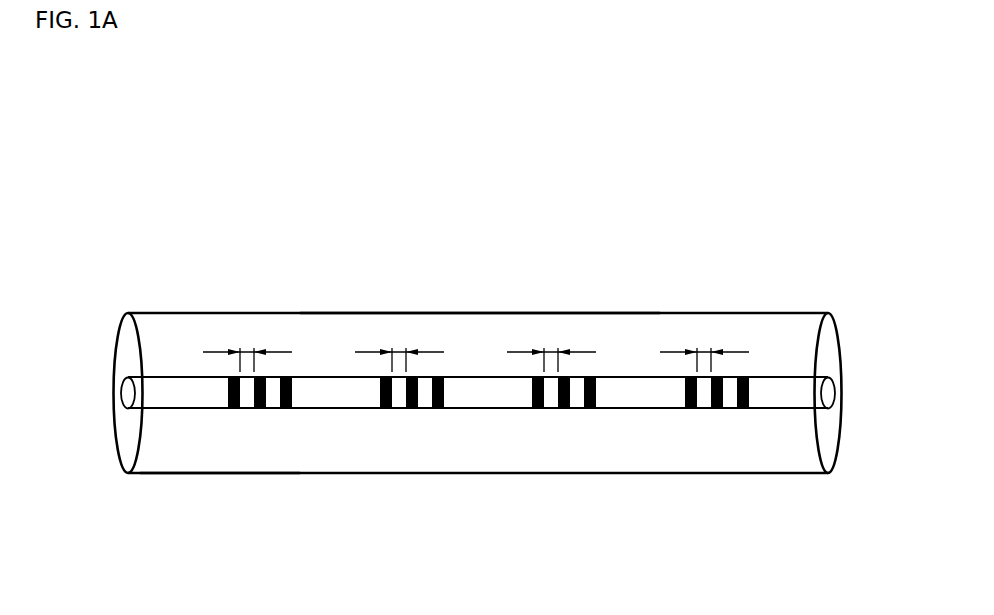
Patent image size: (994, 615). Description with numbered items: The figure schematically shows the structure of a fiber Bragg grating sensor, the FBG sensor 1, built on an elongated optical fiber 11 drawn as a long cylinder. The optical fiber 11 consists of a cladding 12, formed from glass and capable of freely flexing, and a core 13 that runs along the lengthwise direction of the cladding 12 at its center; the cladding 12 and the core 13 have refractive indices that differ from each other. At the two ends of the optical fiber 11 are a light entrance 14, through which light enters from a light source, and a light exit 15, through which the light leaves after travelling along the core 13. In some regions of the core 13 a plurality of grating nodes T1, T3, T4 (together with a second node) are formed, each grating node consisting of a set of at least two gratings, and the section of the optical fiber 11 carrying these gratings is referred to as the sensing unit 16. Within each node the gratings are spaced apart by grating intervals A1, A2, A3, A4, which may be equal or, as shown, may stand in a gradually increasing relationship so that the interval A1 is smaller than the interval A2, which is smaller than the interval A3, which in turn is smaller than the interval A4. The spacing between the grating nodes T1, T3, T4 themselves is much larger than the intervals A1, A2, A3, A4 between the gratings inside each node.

The FBG sensor 1 is at (220, 222).
The optical fiber 11 is at (783, 333).
The cladding 12 is at (472, 332).
The core 13 is at (467, 398).
The light entrance 14 is at (128, 396).
The light exit 15 is at (828, 393).
The sensing unit 16 is at (168, 473).
The grating node T1 is at (247, 420).
The grating node T3 is at (552, 420).
The grating node T4 is at (702, 420).
The grating interval A1 is at (247, 348).
The grating interval A2 is at (399, 348).
The grating interval A3 is at (551, 348).
The grating interval A4 is at (704, 348).